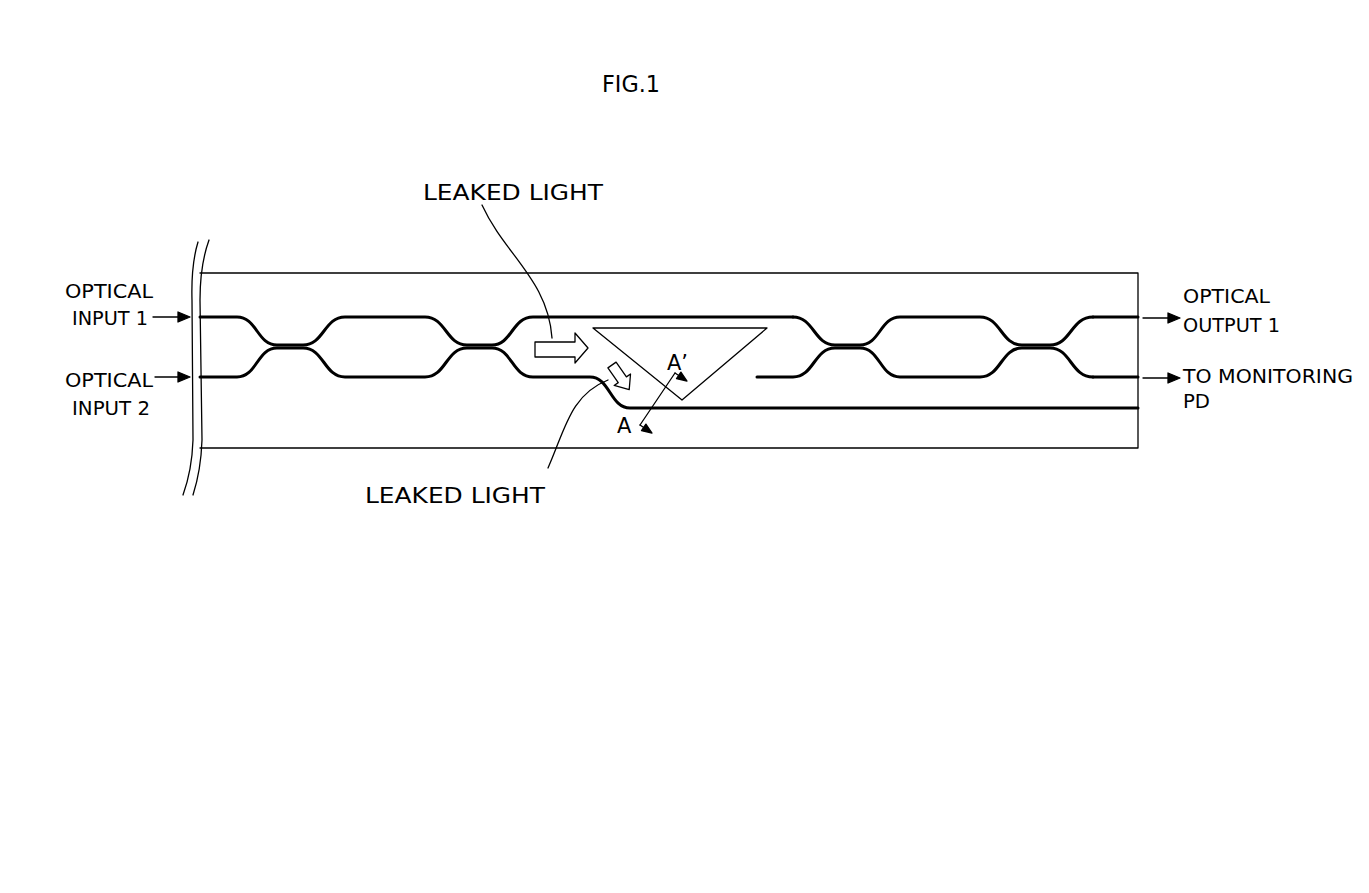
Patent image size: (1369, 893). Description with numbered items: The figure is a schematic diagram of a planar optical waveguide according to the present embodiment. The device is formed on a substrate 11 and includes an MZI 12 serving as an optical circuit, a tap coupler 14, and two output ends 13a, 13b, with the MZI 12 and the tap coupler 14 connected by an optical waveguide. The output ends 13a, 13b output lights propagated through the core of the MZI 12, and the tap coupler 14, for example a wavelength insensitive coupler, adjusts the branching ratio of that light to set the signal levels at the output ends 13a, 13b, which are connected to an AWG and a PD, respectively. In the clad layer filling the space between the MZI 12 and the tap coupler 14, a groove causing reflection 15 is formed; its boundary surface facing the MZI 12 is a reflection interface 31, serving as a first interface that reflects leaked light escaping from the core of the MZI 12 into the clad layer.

The substrate 11 is at (283, 273).
The MZI 12 is at (390, 317).
The output end 13a is at (1133, 317).
The output end 13b is at (1133, 375).
The tap coupler 14 is at (938, 317).
The groove causing reflection 15 is at (652, 329).
The reflection interface 31 is at (596, 335).